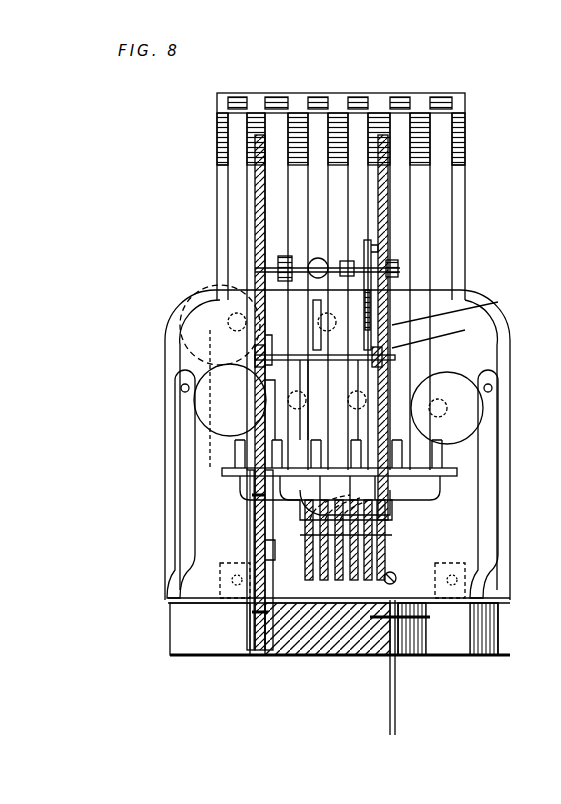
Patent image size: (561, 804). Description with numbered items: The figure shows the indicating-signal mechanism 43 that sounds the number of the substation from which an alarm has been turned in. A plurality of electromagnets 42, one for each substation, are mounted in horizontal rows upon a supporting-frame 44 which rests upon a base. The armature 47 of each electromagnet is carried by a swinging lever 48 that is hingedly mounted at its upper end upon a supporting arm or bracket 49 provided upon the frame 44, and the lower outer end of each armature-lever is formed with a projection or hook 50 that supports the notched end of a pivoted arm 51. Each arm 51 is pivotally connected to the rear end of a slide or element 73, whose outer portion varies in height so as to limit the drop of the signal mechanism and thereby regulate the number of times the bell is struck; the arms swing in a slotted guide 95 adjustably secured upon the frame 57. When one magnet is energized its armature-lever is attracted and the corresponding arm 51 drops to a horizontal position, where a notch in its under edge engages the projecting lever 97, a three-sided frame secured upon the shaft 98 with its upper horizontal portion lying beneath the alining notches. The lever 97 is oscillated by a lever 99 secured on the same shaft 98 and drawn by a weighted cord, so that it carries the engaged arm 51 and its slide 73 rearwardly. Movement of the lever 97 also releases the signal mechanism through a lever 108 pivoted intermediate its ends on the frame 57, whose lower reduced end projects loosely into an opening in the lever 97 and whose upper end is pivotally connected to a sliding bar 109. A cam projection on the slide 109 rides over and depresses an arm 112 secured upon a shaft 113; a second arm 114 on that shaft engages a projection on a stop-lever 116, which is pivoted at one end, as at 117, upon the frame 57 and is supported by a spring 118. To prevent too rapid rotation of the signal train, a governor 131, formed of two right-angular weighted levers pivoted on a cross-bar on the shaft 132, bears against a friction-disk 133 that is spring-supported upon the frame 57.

The electromagnet 42 is at (205, 330).
The mechanism 43 is at (338, 432).
The supporting-frame 44 is at (354, 484).
The armature 47 is at (225, 300).
The swinging lever 48 is at (232, 200).
The supporting arm or bracket 49 is at (225, 156).
The projection or hook 50 is at (240, 450).
The pivoted arm 51 is at (238, 440).
The frame 57 is at (257, 226).
The slide or element 73 is at (302, 598).
The slotted guide 95 is at (280, 515).
The lever 97 is at (258, 548).
The shaft 98 is at (408, 625).
The lever 99 is at (405, 667).
The lever 108 is at (245, 386).
The sliding bar 109 is at (228, 353).
The arm 112 is at (300, 352).
The shaft 113 is at (313, 400).
The second arm 114 is at (363, 400).
The stop-lever 116 is at (443, 333).
The pivot 117 is at (460, 308).
The spring 118 is at (368, 355).
The governor 131 is at (327, 257).
The shaft 132 is at (278, 260).
The friction-disk 133 is at (366, 240).